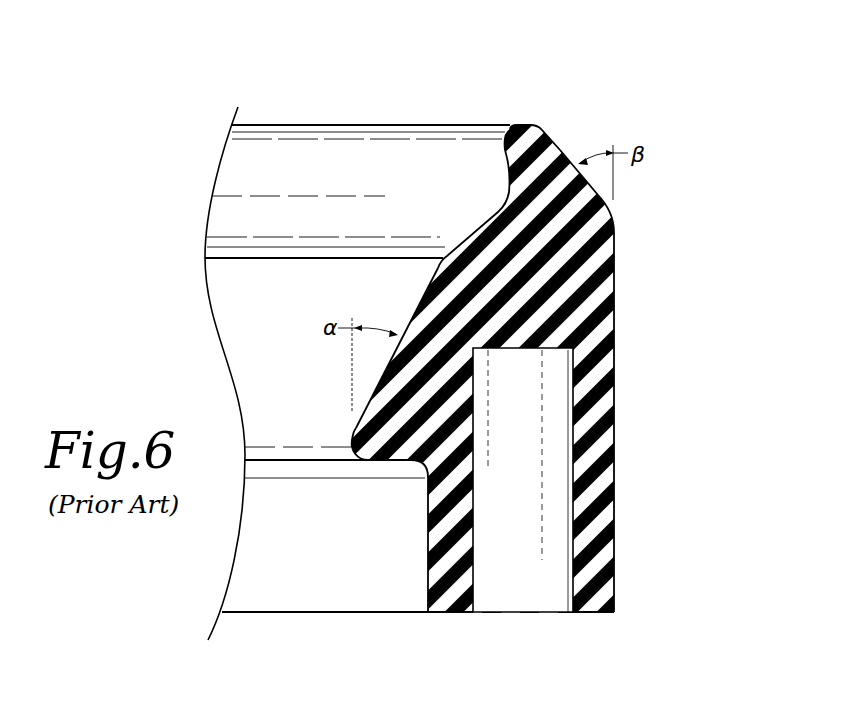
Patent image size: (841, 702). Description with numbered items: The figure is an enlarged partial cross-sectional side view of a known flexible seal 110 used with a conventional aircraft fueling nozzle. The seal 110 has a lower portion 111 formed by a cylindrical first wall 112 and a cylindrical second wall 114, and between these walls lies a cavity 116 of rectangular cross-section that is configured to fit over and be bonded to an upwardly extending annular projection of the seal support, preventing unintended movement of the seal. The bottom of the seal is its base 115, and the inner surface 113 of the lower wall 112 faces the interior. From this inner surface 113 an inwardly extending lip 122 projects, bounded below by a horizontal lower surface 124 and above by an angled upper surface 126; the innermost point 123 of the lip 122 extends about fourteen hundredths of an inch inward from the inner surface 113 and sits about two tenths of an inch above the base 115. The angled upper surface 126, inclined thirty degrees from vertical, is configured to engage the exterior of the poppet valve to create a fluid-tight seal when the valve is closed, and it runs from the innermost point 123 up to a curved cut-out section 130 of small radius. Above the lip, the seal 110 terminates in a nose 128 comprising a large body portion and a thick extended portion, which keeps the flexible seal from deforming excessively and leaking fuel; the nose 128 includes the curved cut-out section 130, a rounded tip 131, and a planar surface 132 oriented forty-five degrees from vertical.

The seal 110 is at (712, 175).
The lower portion 111 is at (636, 571).
The cylindrical first wall 112 is at (435, 542).
The inner surface 113 is at (430, 587).
The cylindrical second wall 114 is at (603, 453).
The base 115 is at (446, 614).
The cavity 116 is at (534, 616).
The lip 122 is at (320, 458).
The innermost point 123 is at (352, 435).
The horizontal lower surface 124 is at (389, 468).
The angled upper surface 126 is at (420, 303).
The nose 128 is at (547, 124).
The curved cut-out section 130 is at (507, 196).
The tip 131 is at (510, 128).
The planar surface 132 is at (558, 150).